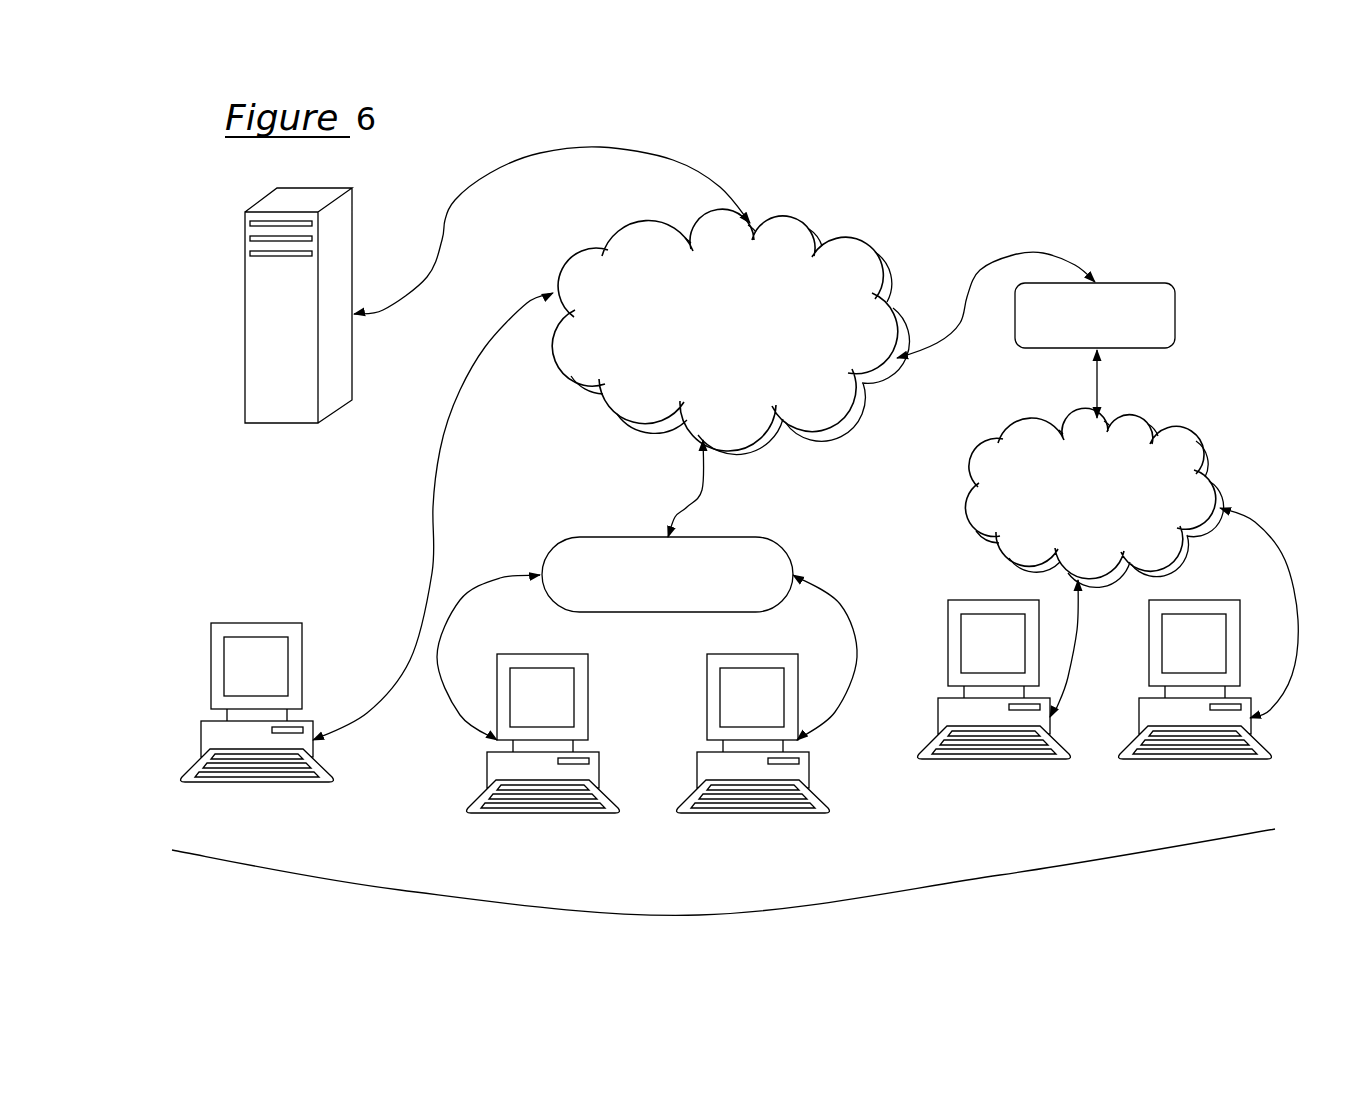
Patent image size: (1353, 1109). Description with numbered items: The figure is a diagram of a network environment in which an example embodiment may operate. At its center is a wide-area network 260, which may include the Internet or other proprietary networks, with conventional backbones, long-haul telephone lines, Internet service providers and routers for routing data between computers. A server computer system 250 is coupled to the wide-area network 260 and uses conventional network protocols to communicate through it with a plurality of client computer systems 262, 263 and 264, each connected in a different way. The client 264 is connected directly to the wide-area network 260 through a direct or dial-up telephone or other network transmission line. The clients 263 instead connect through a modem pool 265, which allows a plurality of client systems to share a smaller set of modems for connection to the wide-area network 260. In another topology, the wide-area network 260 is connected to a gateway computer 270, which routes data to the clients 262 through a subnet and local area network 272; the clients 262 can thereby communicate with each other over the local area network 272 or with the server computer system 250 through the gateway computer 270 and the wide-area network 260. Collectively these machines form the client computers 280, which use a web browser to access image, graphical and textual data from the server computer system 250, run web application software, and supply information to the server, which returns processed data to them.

The server computer system 250 is at (243, 223).
The wide-area network 260 is at (803, 220).
The gateway computer 270 is at (1140, 277).
The local area network 272 is at (1163, 420).
The modem pool 265 is at (635, 533).
The client computer system 264 is at (252, 612).
The client computer systems 263 is at (487, 762).
The client computer systems 262 is at (978, 600).
The client computers 280 is at (723, 901).